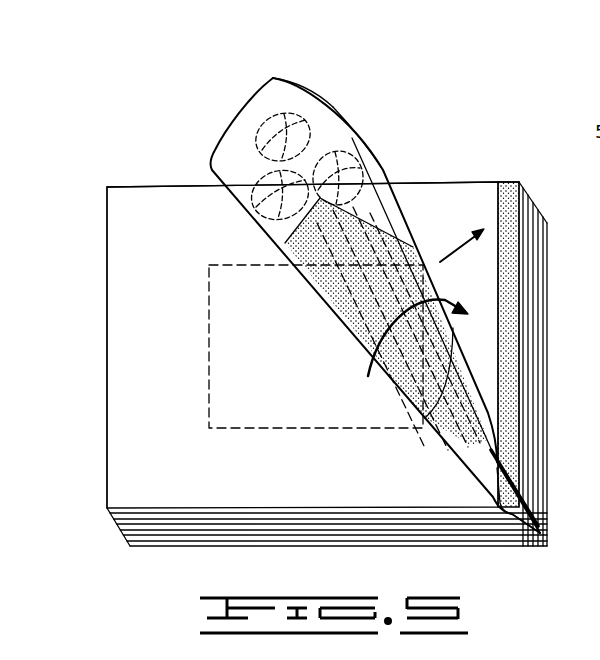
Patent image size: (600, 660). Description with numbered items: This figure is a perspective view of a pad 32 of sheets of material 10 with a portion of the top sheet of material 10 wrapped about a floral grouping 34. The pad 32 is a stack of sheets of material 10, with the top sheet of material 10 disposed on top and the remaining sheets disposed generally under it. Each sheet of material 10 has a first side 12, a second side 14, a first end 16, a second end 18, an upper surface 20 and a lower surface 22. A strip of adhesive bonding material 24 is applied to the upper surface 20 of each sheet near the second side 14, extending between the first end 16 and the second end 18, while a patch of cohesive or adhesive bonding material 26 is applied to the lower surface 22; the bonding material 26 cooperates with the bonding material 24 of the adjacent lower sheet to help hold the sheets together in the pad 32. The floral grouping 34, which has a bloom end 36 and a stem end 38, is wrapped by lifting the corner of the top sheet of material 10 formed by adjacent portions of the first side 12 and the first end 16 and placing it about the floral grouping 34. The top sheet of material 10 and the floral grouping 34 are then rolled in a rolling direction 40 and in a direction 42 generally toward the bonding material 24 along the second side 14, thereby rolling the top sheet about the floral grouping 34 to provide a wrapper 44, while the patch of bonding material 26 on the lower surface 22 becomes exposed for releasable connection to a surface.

The sheet of material 10 is at (125, 182).
The first side 12 is at (105, 388).
The second side 14 is at (523, 350).
The first end 16 is at (228, 508).
The second end 18 is at (178, 186).
The upper surface 20 is at (137, 250).
The lower surface 22 is at (278, 102).
The bonding material 24 is at (510, 427).
The bonding material 26 is at (350, 298).
The pad 32 is at (497, 88).
The floral grouping 34 is at (278, 232).
The bloom end 36 is at (353, 157).
The stem end 38 is at (527, 497).
The rolling direction 40 is at (362, 378).
The direction 42 is at (453, 248).
The wrapper 44 is at (344, 84).